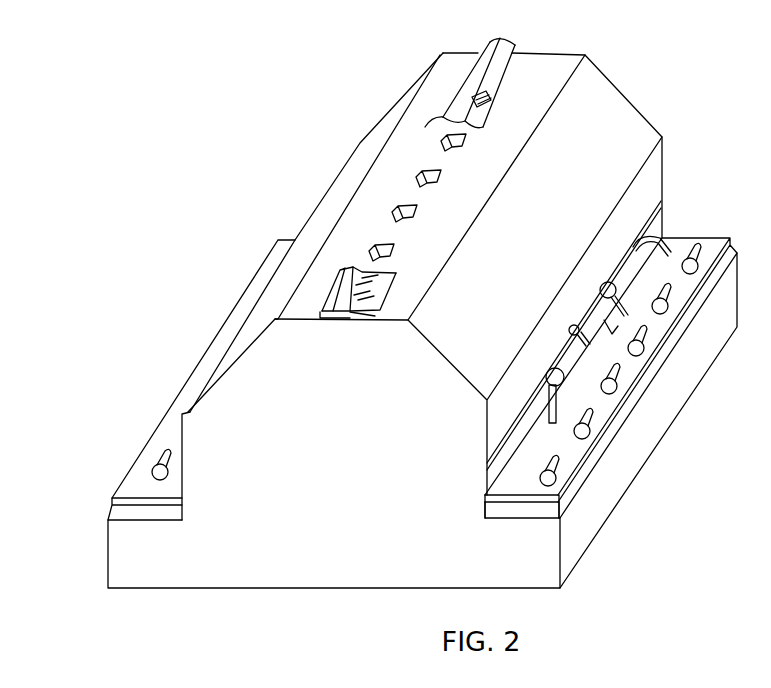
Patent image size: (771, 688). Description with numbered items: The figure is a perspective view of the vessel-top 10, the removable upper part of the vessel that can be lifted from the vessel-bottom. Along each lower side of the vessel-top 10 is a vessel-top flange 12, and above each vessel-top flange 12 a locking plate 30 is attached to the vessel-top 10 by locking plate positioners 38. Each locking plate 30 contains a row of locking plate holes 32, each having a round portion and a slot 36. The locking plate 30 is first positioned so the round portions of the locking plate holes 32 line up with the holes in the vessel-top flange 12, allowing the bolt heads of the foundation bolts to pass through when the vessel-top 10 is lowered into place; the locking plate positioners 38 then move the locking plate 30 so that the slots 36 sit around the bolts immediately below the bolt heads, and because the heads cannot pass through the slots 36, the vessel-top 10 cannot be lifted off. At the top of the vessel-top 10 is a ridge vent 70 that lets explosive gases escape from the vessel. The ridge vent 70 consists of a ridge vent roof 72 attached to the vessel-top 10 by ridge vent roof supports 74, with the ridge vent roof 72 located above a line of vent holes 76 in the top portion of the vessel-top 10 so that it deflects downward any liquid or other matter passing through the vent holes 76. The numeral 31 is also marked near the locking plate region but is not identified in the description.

The vessel-top 10 is at (674, 158).
The vessel-top flange 12 is at (148, 589).
The locking plate 30 is at (125, 470).
The recess 31 is at (526, 504).
The locking plate hole 32 is at (160, 463).
The slot 36 is at (548, 388).
The locking plate positioner 38 is at (633, 270).
The ridge vent 70 is at (527, 44).
The ridge vent roof 72 is at (498, 75).
The ridge vent roof support 74 is at (350, 322).
The vent hole 76 is at (374, 284).